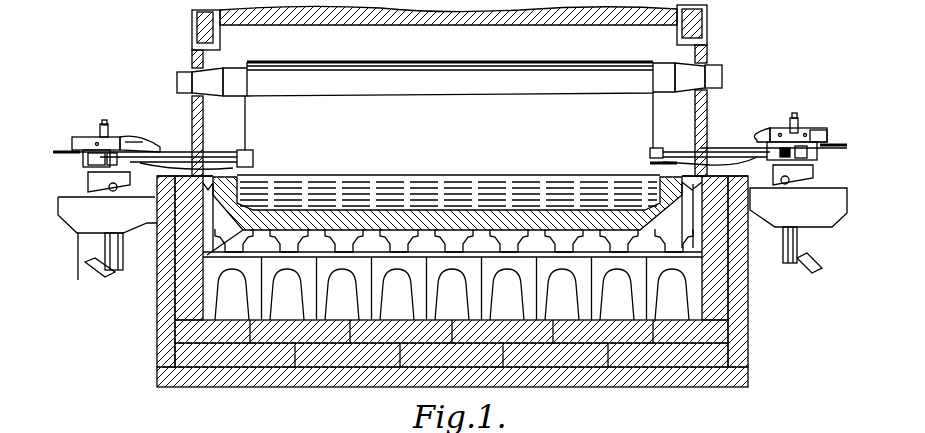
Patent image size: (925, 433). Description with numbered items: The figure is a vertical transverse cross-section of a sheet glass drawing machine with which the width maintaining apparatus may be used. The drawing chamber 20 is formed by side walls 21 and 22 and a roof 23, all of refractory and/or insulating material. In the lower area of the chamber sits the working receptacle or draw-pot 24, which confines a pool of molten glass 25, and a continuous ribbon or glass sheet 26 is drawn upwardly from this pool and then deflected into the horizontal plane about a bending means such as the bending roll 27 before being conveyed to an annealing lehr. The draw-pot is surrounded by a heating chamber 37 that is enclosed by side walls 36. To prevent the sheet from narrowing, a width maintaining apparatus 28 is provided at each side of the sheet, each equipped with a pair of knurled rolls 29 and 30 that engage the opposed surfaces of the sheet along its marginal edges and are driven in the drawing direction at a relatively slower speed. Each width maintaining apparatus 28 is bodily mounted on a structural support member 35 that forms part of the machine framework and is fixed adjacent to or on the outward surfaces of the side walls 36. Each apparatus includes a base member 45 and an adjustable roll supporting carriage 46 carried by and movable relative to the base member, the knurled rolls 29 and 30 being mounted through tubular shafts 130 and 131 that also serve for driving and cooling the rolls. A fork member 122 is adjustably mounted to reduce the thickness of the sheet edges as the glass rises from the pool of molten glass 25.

The drawing chamber 20 is at (185, 58).
The side wall 21 is at (192, 108).
The side wall 22 is at (707, 43).
The roof 23 is at (497, 13).
The draw-pot 24 is at (263, 217).
The pool of molten glass 25 is at (513, 197).
The glass sheet 26 is at (617, 123).
The bending roll 27 is at (695, 80).
The width maintaining apparatus 28 is at (91, 131).
The knurled roll 29 is at (650, 152).
The knurled roll 30 is at (253, 153).
The structural support member 35 is at (87, 262).
The side wall 36 is at (167, 332).
The heating chamber 37 is at (290, 288).
The base member 45 is at (115, 245).
The roll supporting carriage 46 is at (100, 187).
The fork member 122 is at (157, 147).
The tubular shaft 130 is at (713, 153).
The tubular shaft 131 is at (213, 157).